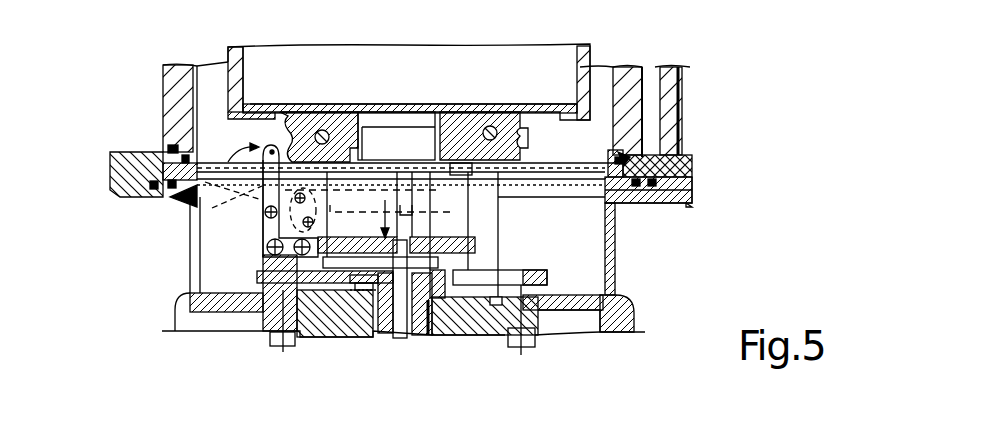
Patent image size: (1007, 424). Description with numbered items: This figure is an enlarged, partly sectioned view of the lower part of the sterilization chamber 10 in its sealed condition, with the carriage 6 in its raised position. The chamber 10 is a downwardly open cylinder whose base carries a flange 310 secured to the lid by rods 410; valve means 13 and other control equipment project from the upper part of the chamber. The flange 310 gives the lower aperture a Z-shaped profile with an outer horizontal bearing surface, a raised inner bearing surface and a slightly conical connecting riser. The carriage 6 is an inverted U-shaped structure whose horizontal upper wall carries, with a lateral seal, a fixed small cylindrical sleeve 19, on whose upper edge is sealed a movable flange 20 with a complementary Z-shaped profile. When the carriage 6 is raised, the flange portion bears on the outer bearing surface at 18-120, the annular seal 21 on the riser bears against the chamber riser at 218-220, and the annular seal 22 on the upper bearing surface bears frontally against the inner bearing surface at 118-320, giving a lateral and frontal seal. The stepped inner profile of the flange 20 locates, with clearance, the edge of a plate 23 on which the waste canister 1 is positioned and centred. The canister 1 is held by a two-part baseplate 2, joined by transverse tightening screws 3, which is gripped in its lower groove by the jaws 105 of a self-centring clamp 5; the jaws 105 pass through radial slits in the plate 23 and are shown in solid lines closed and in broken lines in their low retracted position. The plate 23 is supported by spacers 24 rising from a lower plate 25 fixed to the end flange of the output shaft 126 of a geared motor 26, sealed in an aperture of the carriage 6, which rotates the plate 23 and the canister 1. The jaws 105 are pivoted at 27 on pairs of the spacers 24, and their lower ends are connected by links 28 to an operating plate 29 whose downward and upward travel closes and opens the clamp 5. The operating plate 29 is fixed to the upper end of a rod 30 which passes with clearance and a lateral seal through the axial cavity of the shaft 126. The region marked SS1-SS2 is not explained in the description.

The canister 1 is at (543, 46).
The sterilization chamber 10 is at (638, 69).
The rods 410 is at (676, 100).
The inner horizontal bearing surface and upper bearing surface 118-320 is at (700, 160).
The risers 218-220 is at (700, 180).
The flange 310 is at (650, 168).
The outer horizontal bearing surface and flange portion 18-120 is at (660, 180).
The movable flange 20 is at (690, 206).
The small cylindrical sleeve 19 is at (614, 252).
The sensor signal path SS1-SS2 is at (705, 255).
The carriage 6 is at (633, 310).
The baseplate 2 is at (520, 142).
The plate 23 is at (568, 178).
The transverse tightening screws 3 is at (320, 130).
The jaws 105 is at (271, 150).
The pivot 27 is at (260, 219).
The operating plate 29 is at (418, 212).
The spacers 24 is at (488, 202).
The lower plate 25 is at (540, 278).
The annular seal 21 is at (156, 186).
The annular seal 22 is at (170, 185).
The self-centring clamp 5 is at (257, 245).
The links 28 is at (290, 260).
The geared motor 26 is at (343, 340).
The rod 30 is at (399, 340).
The shaft 126 is at (428, 337).
The valve means 13 is at (700, 415).